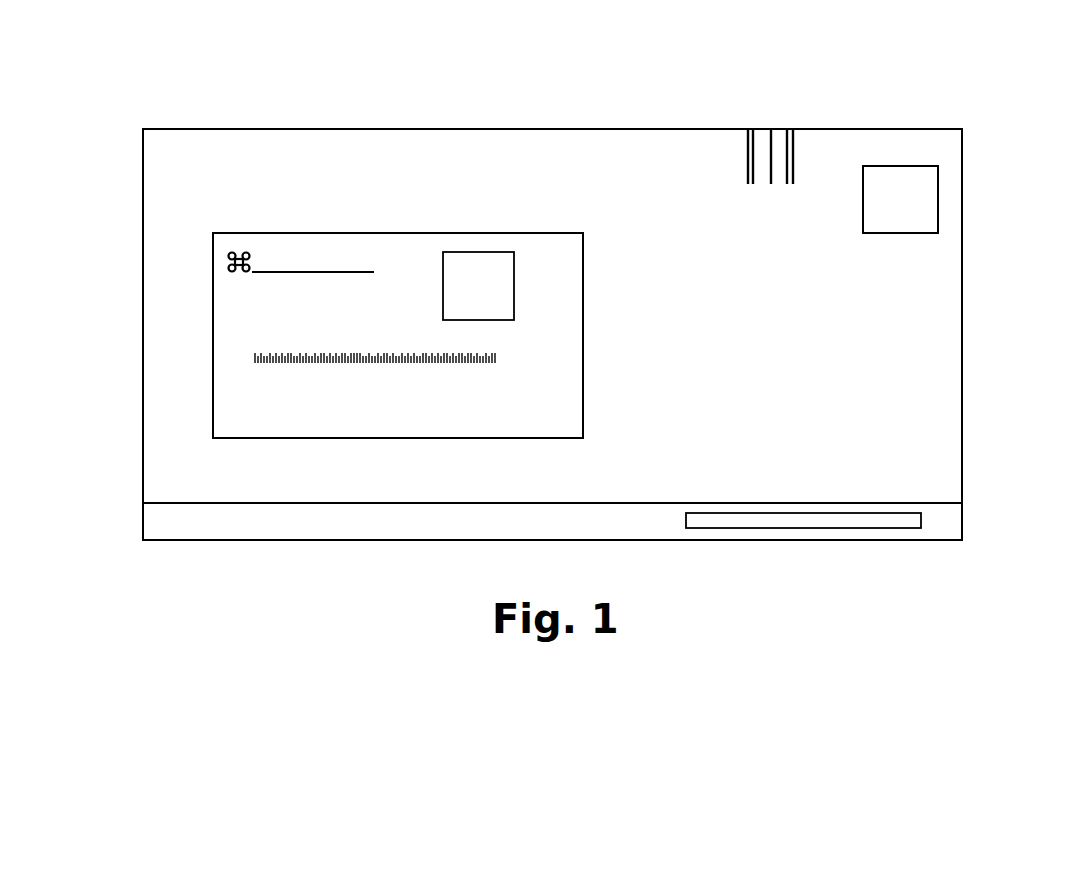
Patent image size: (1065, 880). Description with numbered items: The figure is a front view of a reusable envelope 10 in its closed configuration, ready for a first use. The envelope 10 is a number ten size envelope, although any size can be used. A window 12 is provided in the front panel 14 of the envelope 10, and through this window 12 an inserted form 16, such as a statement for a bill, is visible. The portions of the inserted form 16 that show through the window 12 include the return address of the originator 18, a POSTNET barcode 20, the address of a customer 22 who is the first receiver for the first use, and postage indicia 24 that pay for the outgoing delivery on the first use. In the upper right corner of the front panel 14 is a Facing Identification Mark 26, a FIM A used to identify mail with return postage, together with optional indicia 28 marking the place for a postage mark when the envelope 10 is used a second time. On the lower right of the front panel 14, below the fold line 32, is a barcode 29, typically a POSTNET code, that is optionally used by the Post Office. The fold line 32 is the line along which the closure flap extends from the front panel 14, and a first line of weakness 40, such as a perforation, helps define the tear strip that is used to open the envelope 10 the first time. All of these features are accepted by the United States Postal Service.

The reusable envelope 10 is at (268, 108).
The window 12 is at (568, 347).
The front panel 14 is at (838, 459).
The inserted form 16 is at (542, 420).
The return address of the originator 18 is at (312, 250).
The POSTNET barcode 20 is at (440, 364).
The address of a customer 22 is at (329, 420).
The postage indicia 24 is at (478, 252).
The Facing Identification Mark 26 is at (797, 157).
The optional indicia 28 is at (938, 195).
The barcode 29 is at (787, 526).
The fold line 32 is at (208, 505).
The first line of weakness 40 is at (321, 541).